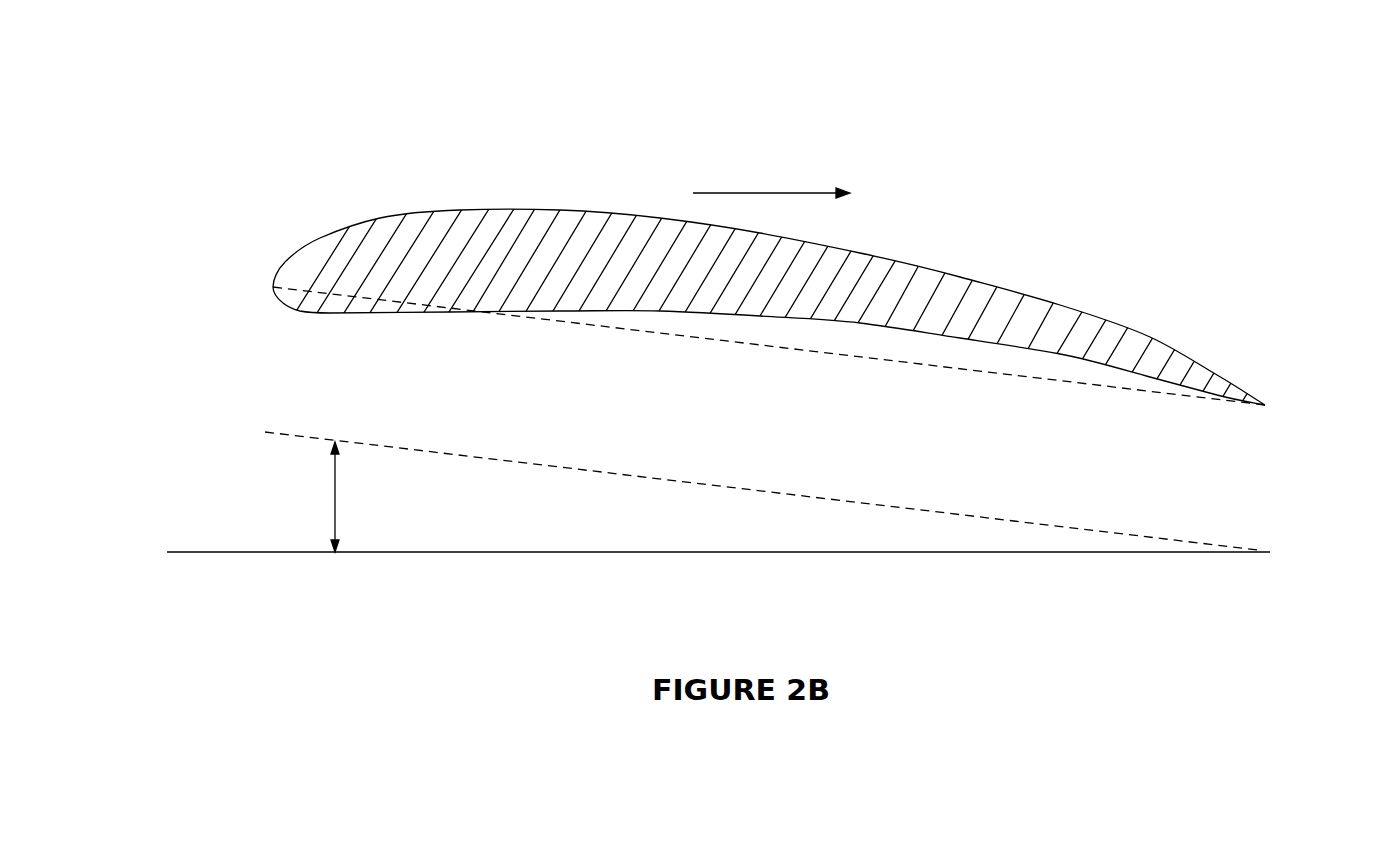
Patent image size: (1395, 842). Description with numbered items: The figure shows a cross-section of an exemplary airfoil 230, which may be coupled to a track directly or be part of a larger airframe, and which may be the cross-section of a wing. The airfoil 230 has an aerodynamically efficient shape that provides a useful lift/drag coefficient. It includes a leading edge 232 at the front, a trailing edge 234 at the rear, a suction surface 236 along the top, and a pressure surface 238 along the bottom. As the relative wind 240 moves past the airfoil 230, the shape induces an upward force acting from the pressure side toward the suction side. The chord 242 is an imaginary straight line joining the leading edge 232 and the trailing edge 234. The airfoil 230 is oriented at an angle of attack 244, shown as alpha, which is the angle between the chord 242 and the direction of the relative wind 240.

The airfoil 230 is at (170, 54).
The leading edge 232 is at (266, 280).
The trailing edge 234 is at (1265, 405).
The suction surface 236 is at (1062, 303).
The pressure surface 238 is at (395, 313).
The relative wind 240 is at (710, 583).
The chord 242 is at (845, 357).
The angle of attack 244 is at (377, 507).